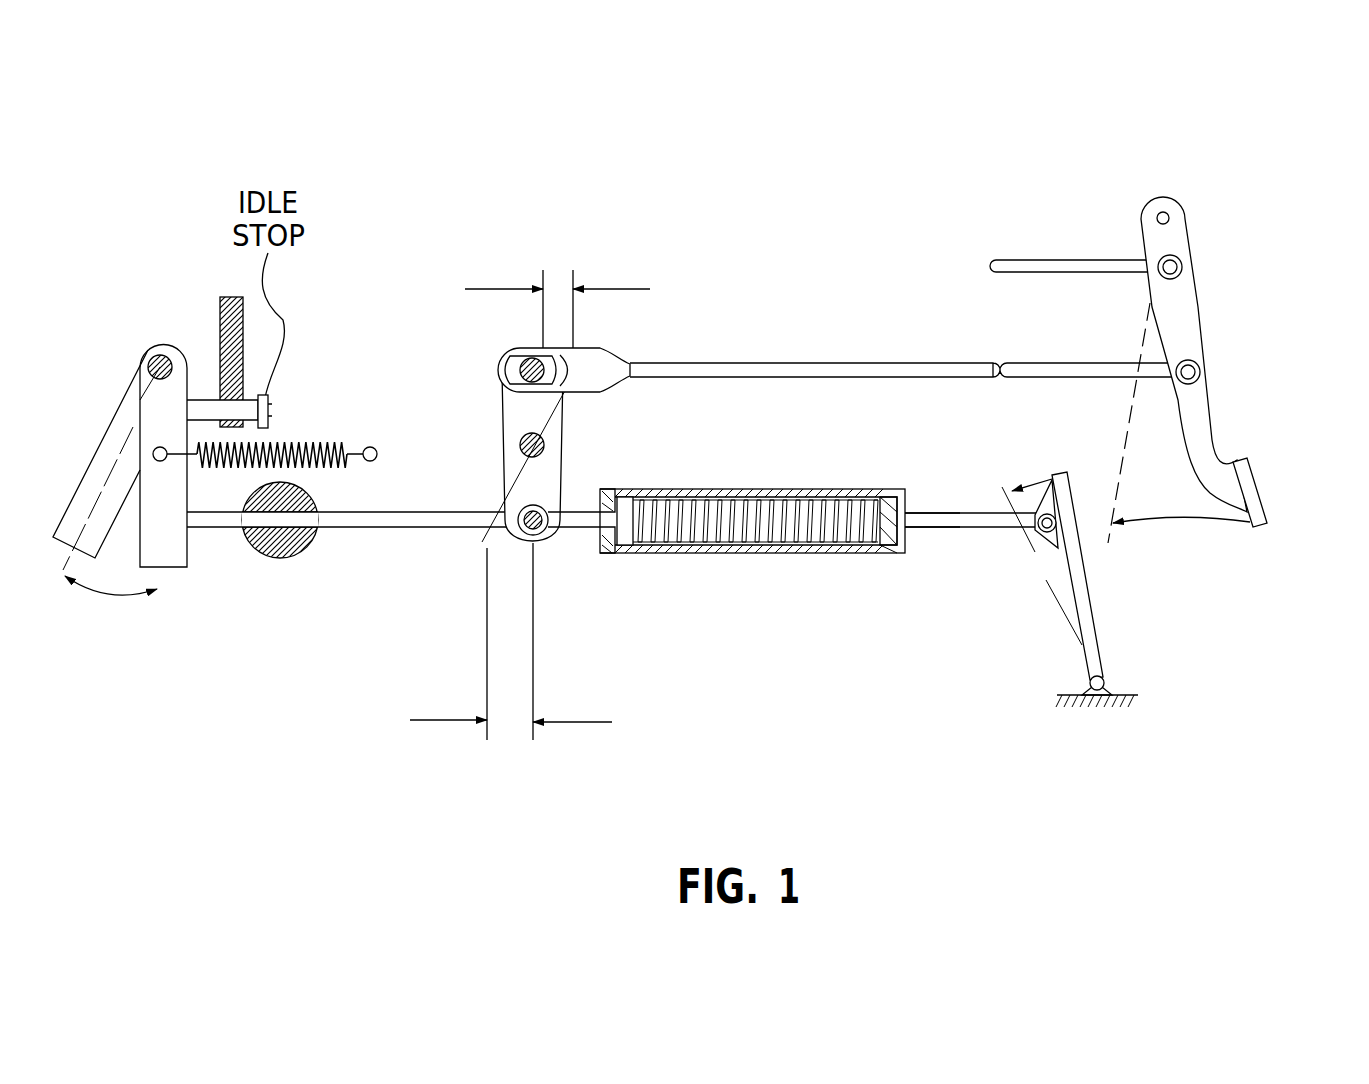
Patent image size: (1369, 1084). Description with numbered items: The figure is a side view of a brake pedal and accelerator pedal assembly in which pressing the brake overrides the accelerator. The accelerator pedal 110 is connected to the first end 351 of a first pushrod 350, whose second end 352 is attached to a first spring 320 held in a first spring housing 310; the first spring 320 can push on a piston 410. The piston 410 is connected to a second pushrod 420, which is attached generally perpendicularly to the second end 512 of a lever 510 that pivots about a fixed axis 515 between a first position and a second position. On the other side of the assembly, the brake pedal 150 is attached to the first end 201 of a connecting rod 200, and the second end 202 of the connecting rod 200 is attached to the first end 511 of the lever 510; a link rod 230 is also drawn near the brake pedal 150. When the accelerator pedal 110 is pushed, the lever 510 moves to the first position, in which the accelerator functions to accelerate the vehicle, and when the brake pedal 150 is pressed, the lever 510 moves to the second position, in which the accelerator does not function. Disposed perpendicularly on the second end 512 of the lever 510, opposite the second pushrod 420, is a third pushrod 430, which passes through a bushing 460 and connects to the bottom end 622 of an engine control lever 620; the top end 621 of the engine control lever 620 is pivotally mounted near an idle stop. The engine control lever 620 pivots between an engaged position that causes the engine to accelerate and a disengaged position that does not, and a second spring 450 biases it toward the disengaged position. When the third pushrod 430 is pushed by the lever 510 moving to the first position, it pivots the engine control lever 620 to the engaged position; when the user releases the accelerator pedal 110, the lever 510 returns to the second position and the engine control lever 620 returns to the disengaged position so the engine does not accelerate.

The accelerator pedal 110 is at (1100, 634).
The brake pedal 150 is at (1203, 303).
The connecting rod 200 is at (795, 363).
The first end of connecting rod 201 is at (1186, 386).
The second end of connecting rod 202 is at (630, 363).
The link rod 230 is at (1025, 260).
The first spring housing 310 is at (850, 489).
The first spring 320 is at (766, 553).
The first pushrod 350 is at (955, 528).
The first end of first pushrod 351 is at (1057, 547).
The second end of first pushrod 352 is at (922, 528).
The piston 410 is at (642, 553).
The second pushrod 420 is at (583, 550).
The third pushrod 430 is at (362, 527).
The second spring 450 is at (330, 440).
The bushing 460 is at (280, 558).
The lever 510 is at (567, 443).
The first end of lever 511 is at (530, 348).
The second end of lever 512 is at (540, 537).
The fixed axis 515 is at (518, 443).
The engine control lever 620 is at (122, 402).
The top end of engine control lever 621 is at (165, 348).
The bottom end of engine control lever 622 is at (180, 568).